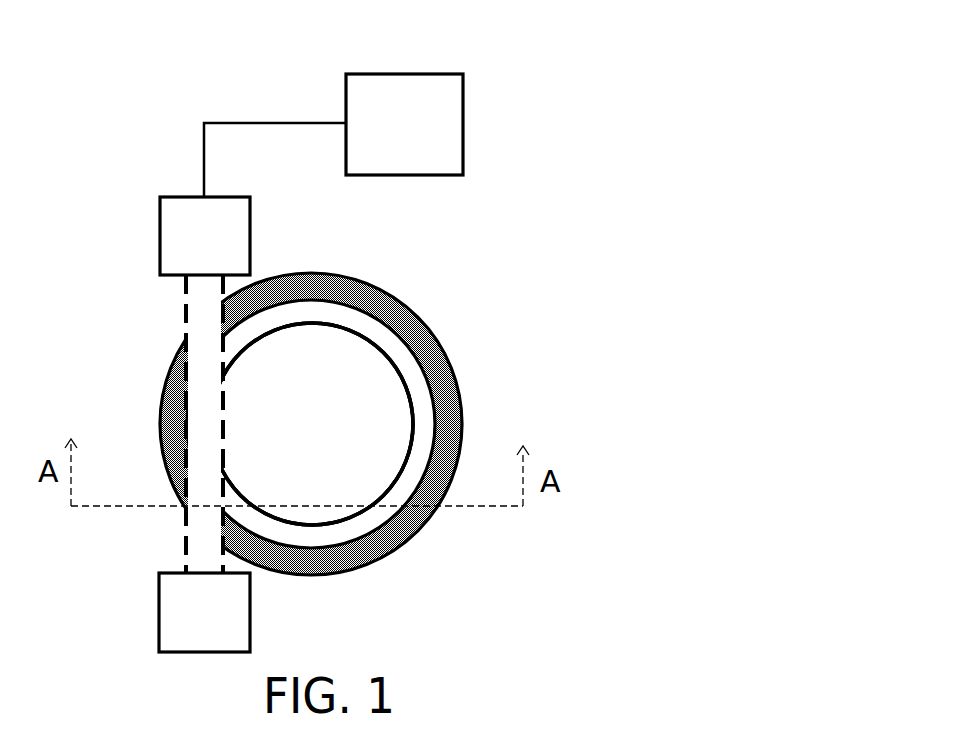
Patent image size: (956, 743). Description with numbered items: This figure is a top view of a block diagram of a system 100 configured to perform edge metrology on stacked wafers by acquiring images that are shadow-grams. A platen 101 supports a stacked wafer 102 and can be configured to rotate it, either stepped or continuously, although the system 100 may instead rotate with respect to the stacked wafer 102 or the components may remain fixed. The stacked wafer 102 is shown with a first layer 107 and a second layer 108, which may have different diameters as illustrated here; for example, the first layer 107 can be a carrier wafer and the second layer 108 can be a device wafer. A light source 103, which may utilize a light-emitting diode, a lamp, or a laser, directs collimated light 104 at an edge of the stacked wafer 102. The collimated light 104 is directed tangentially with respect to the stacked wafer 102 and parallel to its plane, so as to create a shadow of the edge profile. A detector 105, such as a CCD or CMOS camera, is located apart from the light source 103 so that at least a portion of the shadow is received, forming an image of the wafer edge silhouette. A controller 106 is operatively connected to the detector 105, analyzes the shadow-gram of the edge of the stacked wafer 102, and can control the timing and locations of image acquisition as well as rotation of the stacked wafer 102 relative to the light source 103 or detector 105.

The system 100 is at (518, 139).
The platen 101 is at (382, 547).
The stacked wafer 102 is at (318, 373).
The light source 103 is at (233, 630).
The collimated light 104 is at (195, 317).
The detector 105 is at (233, 260).
The controller 106 is at (433, 142).
The first layer 107 is at (413, 438).
The second layer 108 is at (377, 403).